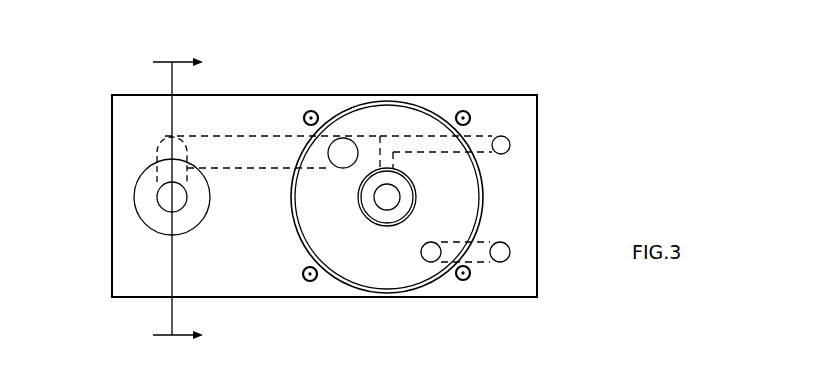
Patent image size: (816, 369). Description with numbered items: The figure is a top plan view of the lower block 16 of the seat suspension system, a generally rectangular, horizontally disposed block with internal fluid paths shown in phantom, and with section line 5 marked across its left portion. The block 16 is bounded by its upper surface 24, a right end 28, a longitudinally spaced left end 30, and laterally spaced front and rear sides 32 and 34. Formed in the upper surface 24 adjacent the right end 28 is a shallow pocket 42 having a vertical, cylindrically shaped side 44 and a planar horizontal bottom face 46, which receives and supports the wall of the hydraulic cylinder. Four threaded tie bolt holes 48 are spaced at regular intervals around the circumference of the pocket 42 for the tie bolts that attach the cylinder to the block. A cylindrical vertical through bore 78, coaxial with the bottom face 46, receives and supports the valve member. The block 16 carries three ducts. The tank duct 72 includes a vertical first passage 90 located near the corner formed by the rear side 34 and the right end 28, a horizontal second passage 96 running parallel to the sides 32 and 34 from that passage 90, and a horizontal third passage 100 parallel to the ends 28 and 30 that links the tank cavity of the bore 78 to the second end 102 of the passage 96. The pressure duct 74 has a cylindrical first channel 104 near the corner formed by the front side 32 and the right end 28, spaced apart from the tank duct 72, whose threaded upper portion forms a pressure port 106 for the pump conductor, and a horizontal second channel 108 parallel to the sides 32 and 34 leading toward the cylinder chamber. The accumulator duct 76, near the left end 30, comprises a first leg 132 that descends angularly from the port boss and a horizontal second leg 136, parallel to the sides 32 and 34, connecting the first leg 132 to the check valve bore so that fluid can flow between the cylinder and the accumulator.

The section line 5- 5 is at (167, 198).
The lower block 16 is at (95, 251).
The upper surface 24 is at (132, 275).
The right end 28 is at (537, 128).
The left end 30 is at (112, 118).
The front side 32 is at (272, 297).
The rear side 34 is at (270, 95).
The pocket 42 is at (318, 225).
The side 44 is at (292, 197).
The bottom face 46 is at (368, 276).
The tie bolt holes 48 is at (316, 111).
The tank duct 72 is at (485, 135).
The pressure duct 74 is at (497, 285).
The accumulator duct 76 is at (213, 118).
The through bore 78 is at (392, 200).
The first passage 90 is at (510, 148).
The second passage 96 is at (437, 134).
The third passage 100 is at (373, 150).
The second end 102 is at (407, 137).
The first channel 104 is at (503, 262).
The pressure port 106 is at (505, 245).
The second channel 108 is at (480, 242).
The first leg 132 is at (160, 178).
The second leg 136 is at (215, 140).